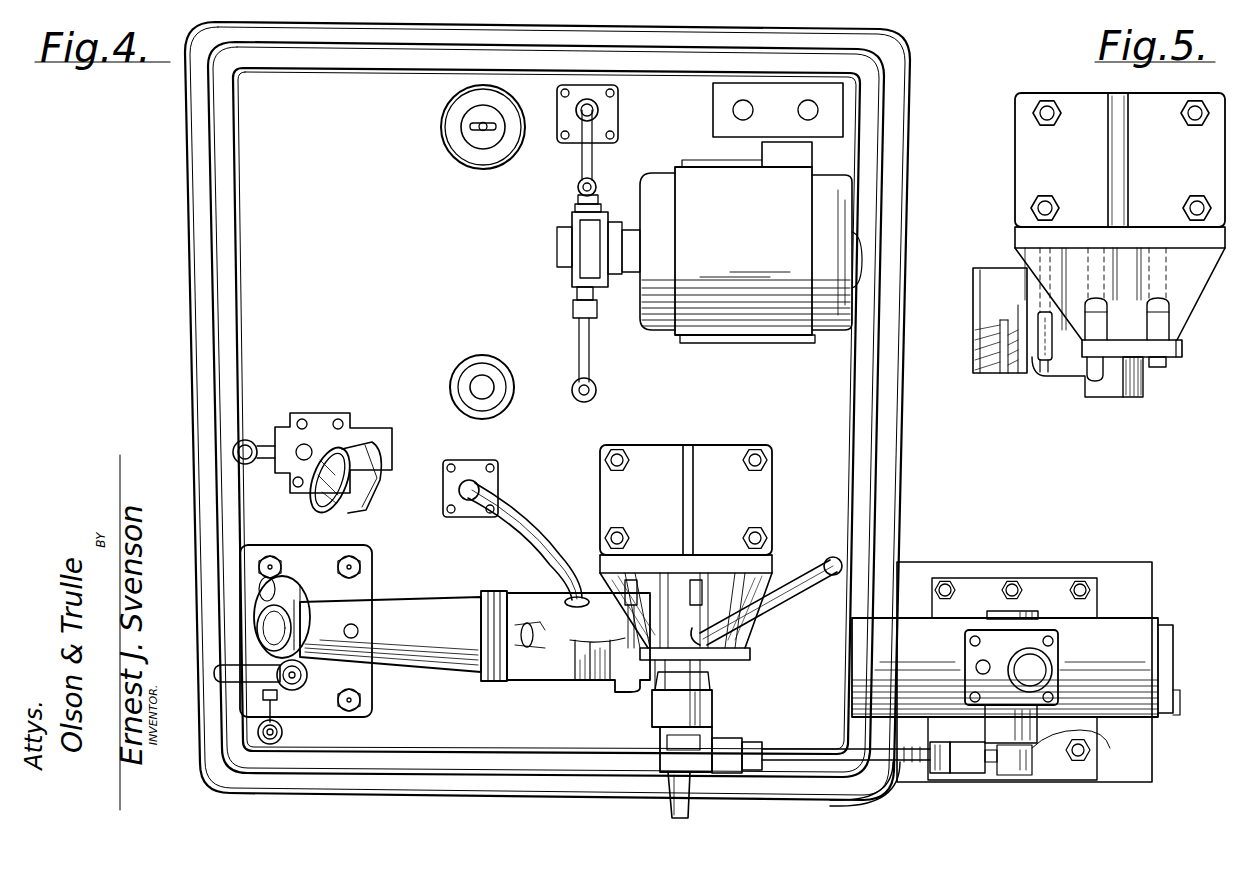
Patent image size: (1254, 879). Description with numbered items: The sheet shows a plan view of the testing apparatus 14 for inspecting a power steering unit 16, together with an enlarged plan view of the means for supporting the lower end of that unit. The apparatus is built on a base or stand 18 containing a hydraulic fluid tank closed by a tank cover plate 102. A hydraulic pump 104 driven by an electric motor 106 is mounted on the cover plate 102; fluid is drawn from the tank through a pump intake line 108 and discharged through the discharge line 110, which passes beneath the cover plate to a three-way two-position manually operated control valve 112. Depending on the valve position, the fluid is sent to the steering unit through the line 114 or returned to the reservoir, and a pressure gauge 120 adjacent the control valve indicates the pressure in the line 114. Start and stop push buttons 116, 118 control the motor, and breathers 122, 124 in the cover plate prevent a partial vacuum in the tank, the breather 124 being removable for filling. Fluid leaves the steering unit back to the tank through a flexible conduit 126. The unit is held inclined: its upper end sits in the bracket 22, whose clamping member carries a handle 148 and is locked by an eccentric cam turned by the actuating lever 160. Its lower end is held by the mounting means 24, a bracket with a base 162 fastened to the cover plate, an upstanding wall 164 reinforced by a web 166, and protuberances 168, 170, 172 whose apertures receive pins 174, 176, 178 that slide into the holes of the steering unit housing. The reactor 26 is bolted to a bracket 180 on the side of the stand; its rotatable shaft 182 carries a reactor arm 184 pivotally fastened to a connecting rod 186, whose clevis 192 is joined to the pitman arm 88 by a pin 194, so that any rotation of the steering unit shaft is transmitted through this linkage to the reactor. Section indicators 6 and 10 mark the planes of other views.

In FIG. 4, the testing apparatus 14 is at (169, 307).
In FIG. 4, the base or stand 18 is at (182, 420).
In FIG. 4, the tank cover plate 102 is at (232, 124).
In FIG. 4, the breather 124 is at (462, 150).
In FIG. 4, the pump intake line 108 is at (580, 168).
In FIG. 4, the start push button 116 is at (797, 110).
In FIG. 4, the stop push button 118 is at (742, 110).
In FIG. 4, the electric motor 106 is at (695, 172).
In FIG. 4, the hydraulic pump 104 is at (570, 272).
In FIG. 4, the discharge line 110 is at (578, 350).
In FIG. 4, the breather 122 is at (462, 360).
In FIG. 4, the control valve 112 is at (292, 410).
In FIG. 4, the pressure gauge 120 is at (350, 448).
In FIG. 4, the bracket 22 is at (253, 596).
In FIG. 4, the power steering unit 16 is at (433, 683).
In FIG. 4, the handle 148 is at (275, 705).
In FIG. 4, the actuating lever 160 is at (305, 678).
In FIG. 4, the line 114 is at (518, 510).
In FIG. 4, the mounting means 24 is at (781, 499).
In FIG. 5, the mounting means 24 is at (1003, 170).
In FIG. 4, the base 162 is at (655, 455).
In FIG. 5, the base 162 is at (1032, 128).
In FIG. 4, the web 166 is at (683, 490).
In FIG. 5, the web 166 is at (1118, 102).
In FIG. 4, the upstanding wall 164 is at (612, 560).
In FIG. 5, the upstanding wall 164 is at (1180, 227).
In FIG. 4, the protuberance 172 is at (630, 573).
In FIG. 5, the protuberance 172 is at (1025, 290).
In FIG. 4, the protuberance 170 is at (702, 570).
In FIG. 5, the protuberance 170 is at (1130, 378).
In FIG. 4, the protuberance 168 is at (765, 600).
In FIG. 5, the protuberance 168 is at (1160, 300).
In FIG. 4, the flexible conduit 126 is at (828, 562).
In FIG. 4, the section line 6 is at (756, 635).
In FIG. 4, the pitman arm 88 is at (712, 715).
In FIG. 4, the clevis 192 is at (740, 742).
In FIG. 4, the pin 194 is at (690, 815).
In FIG. 4, the connecting rod 186 is at (855, 795).
In FIG. 4, the bracket 180 is at (1138, 568).
In FIG. 4, the reactor 26 is at (1135, 712).
In FIG. 4, the rotatable shaft 182 is at (1040, 775).
In FIG. 4, the reactor arm 184 is at (1092, 752).
In FIG. 4, the section line 10 is at (998, 532).
In FIG. 5, the pin 174 is at (1163, 363).
In FIG. 5, the pin 176 is at (1075, 377).
In FIG. 5, the pin 178 is at (1040, 372).